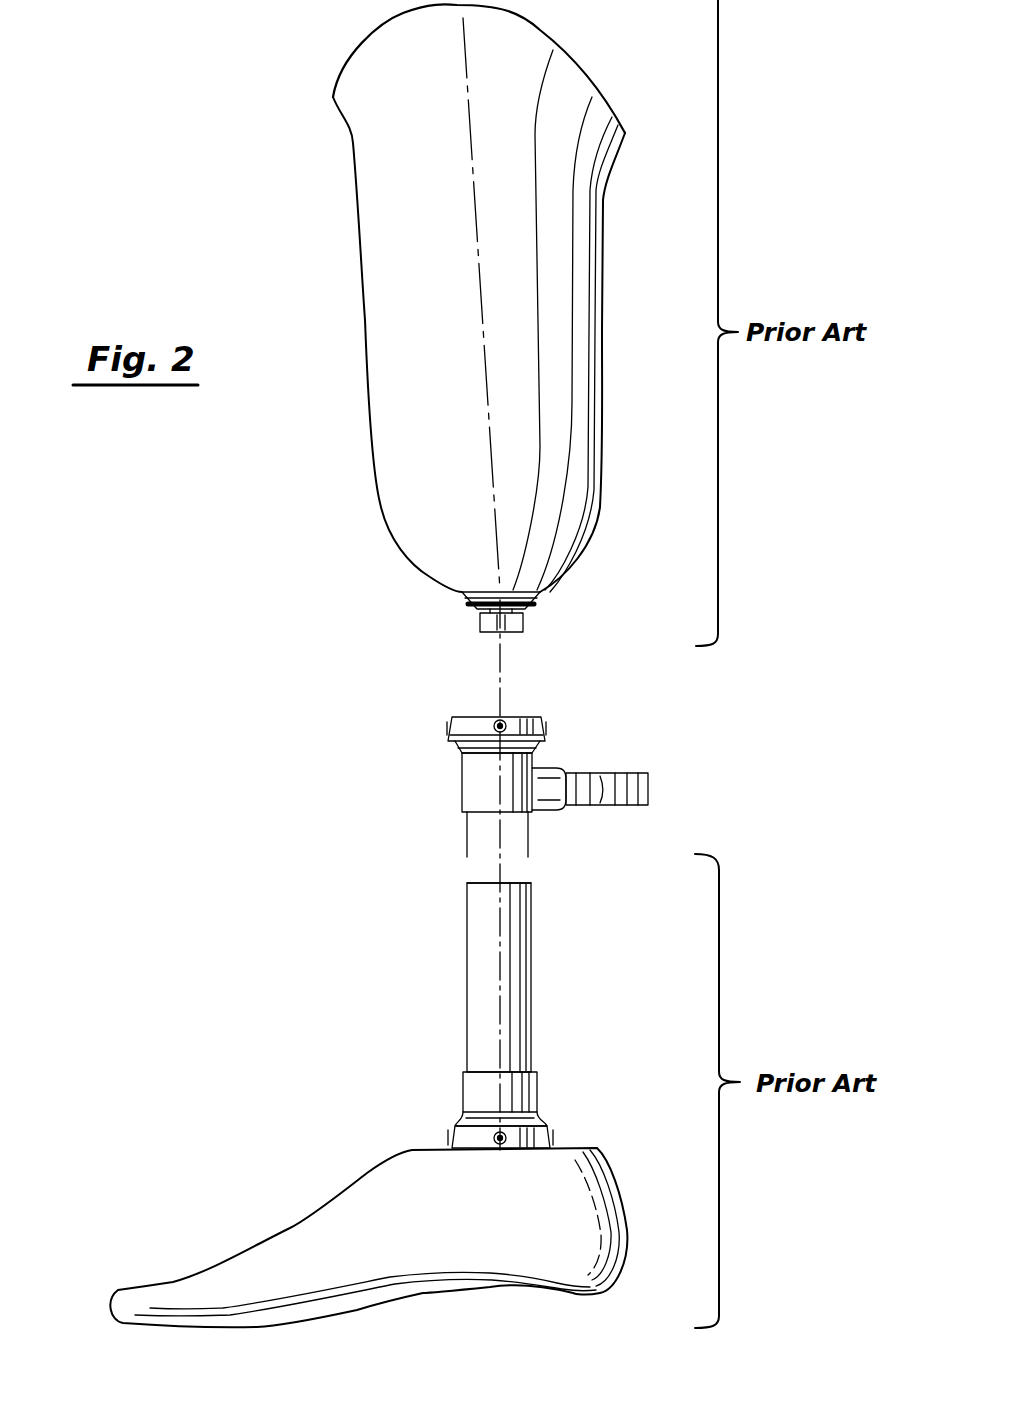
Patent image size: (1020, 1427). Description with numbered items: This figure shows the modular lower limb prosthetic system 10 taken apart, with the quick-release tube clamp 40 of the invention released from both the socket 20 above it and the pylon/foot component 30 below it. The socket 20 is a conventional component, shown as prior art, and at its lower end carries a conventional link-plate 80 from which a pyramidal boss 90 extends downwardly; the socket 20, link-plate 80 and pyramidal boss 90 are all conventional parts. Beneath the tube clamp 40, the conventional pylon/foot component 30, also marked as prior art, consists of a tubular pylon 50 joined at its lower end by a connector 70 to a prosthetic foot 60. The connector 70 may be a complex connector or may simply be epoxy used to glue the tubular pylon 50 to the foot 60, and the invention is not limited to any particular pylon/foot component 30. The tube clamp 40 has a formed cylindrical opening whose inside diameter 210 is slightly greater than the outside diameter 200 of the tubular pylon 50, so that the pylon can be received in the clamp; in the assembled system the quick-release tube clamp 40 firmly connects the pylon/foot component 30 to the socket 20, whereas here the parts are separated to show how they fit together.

The modular lower limb prosthetic system 10 is at (228, 733).
The socket 20 is at (362, 295).
The pylon/foot component 30 is at (580, 1000).
The quick-release tube clamp 40 is at (462, 778).
The tubular pylon 50 is at (467, 993).
The prosthetic foot 60 is at (297, 1227).
The connector 70 is at (538, 1108).
The link-plate 80 is at (540, 602).
The pyramidal boss 90 is at (479, 628).
The outside diameter 200 is at (425, 895).
The inside diameter 210 is at (425, 842).